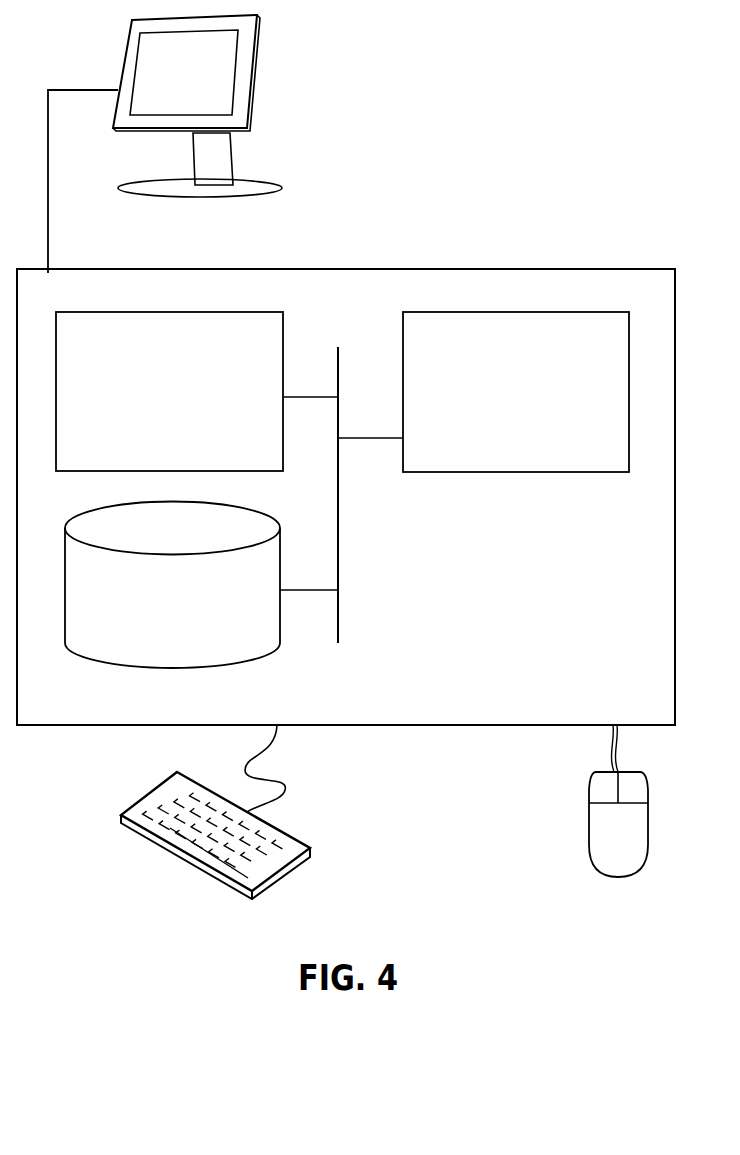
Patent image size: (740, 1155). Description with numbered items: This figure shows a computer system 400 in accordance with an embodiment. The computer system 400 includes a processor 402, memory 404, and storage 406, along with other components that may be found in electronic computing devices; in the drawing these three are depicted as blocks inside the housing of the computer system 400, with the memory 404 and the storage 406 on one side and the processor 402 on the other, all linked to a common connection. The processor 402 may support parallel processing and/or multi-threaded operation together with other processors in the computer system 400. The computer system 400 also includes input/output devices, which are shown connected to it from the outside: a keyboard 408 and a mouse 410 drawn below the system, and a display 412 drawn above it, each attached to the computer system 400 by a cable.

The computer system 400 is at (393, 248).
The processor 402 is at (499, 405).
The memory 404 is at (150, 404).
The storage 406 is at (157, 616).
The keyboard 408 is at (140, 837).
The mouse 410 is at (597, 845).
The display 412 is at (165, 144).